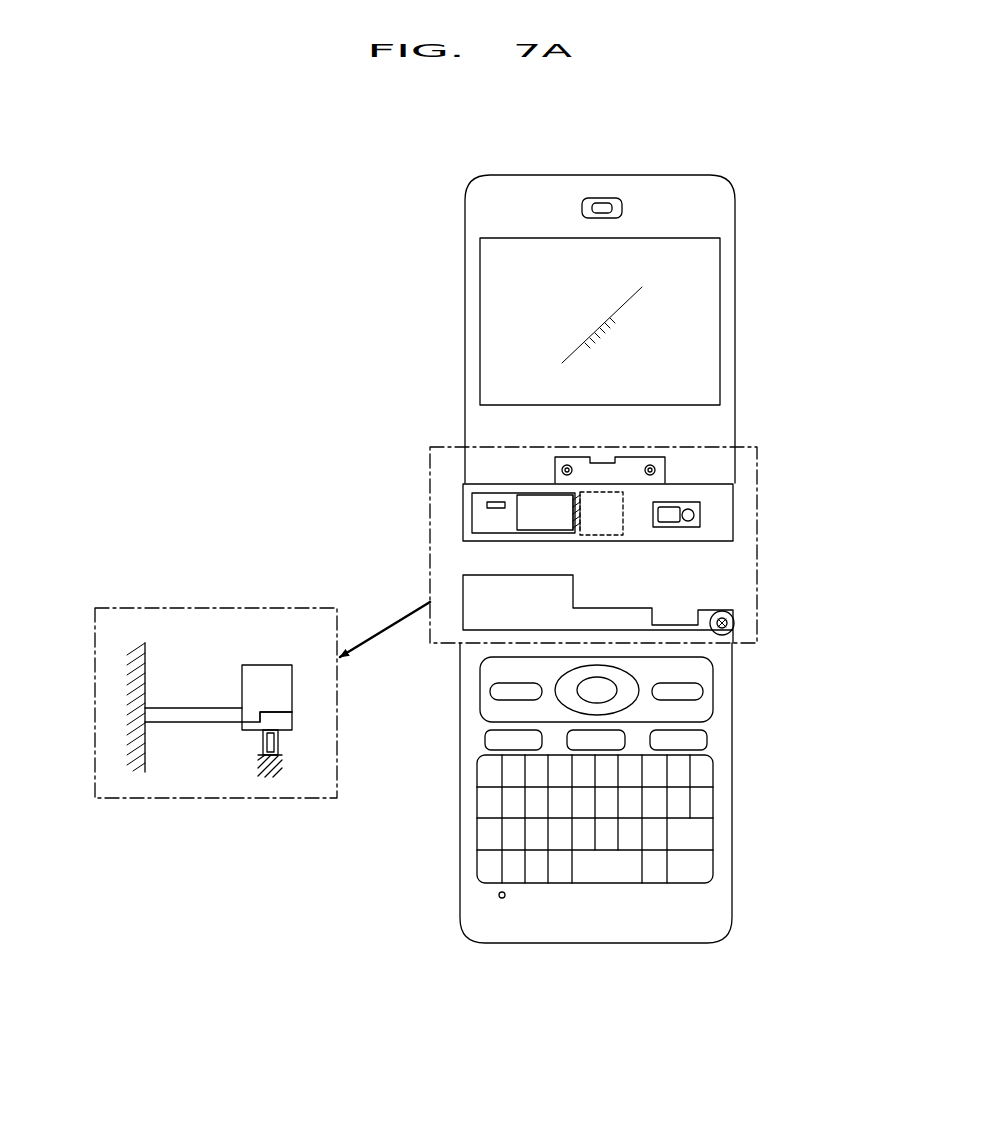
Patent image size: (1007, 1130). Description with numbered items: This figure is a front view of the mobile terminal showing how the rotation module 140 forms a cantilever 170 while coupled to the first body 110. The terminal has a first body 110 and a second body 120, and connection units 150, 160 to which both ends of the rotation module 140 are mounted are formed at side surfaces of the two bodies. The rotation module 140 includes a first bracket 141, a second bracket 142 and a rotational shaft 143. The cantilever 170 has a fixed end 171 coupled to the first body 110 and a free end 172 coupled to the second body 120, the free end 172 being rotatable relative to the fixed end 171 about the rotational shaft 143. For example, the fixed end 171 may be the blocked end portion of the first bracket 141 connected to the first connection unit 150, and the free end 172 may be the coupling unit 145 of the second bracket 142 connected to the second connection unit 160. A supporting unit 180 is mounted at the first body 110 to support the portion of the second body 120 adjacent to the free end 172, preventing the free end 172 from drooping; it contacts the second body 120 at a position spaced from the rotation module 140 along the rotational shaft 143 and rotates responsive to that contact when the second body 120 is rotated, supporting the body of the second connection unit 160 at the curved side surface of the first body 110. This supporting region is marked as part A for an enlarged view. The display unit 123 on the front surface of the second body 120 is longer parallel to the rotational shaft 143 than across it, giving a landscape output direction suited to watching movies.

The first body 110 is at (127, 665).
The second body 120 is at (265, 673).
The display unit 123 is at (700, 310).
The rotation module 140 is at (456, 504).
The first bracket 141 is at (472, 522).
The second bracket 142 is at (598, 541).
The rotational shaft 143 is at (535, 532).
The coupling unit 145 is at (640, 458).
The first connection unit 150 is at (476, 592).
The second connection unit 160 is at (724, 513).
The cantilever 170 is at (200, 732).
The fixed end 171 is at (145, 712).
The free end 172 is at (262, 712).
The supporting unit 180 is at (724, 637).
The part A is at (738, 618).